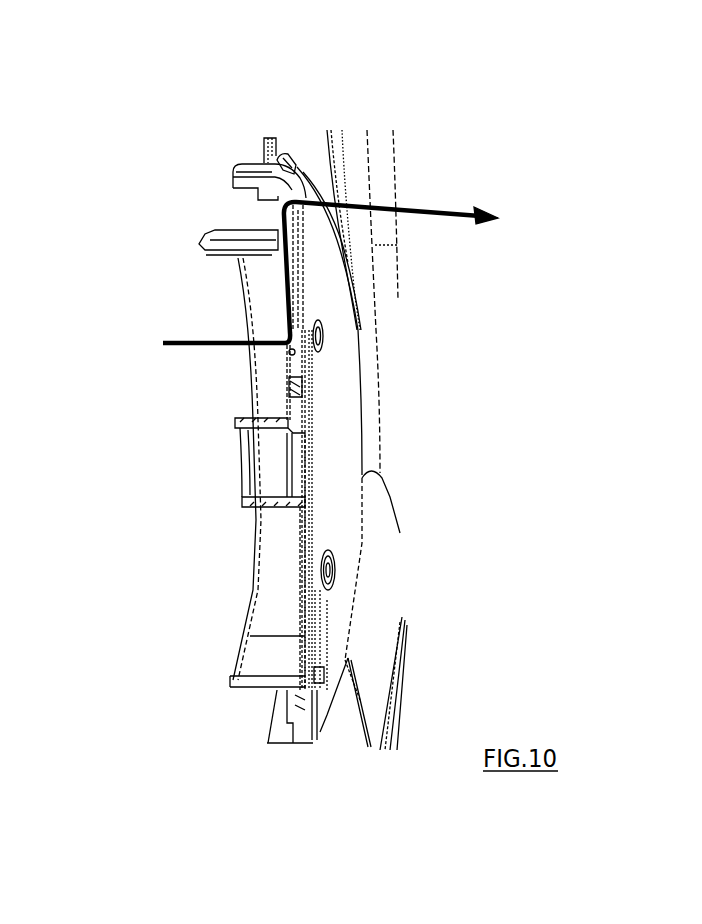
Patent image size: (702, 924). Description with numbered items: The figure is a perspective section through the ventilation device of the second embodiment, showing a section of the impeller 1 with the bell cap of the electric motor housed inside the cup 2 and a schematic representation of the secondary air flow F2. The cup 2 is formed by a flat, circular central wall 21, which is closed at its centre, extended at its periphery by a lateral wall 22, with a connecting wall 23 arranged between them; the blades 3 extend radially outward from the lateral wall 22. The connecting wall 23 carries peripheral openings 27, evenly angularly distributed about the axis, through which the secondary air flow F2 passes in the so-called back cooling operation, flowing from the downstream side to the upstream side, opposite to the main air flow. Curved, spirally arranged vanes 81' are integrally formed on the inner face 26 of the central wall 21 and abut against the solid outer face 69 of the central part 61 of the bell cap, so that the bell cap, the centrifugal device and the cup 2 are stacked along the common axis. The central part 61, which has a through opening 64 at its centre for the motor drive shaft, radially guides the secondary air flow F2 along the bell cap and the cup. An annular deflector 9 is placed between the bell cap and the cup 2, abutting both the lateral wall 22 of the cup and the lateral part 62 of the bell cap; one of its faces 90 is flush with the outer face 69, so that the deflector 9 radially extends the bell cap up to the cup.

The impeller 1 is at (142, 108).
The lateral wall 22 is at (253, 160).
The openings 27 is at (290, 160).
The connecting wall 23 is at (303, 160).
The blades 3 is at (334, 153).
The cup 2 is at (397, 188).
The deflector 9 is at (245, 192).
The secondary air flow F2 is at (327, 272).
The outer face 69 is at (290, 273).
The central wall 21 is at (338, 295).
The central part 61 is at (290, 388).
The through opening 64 is at (297, 422).
The lateral part 62 is at (277, 602).
The vanes 81' is at (405, 668).
The face 90 is at (319, 716).
The inner face 26 is at (316, 641).